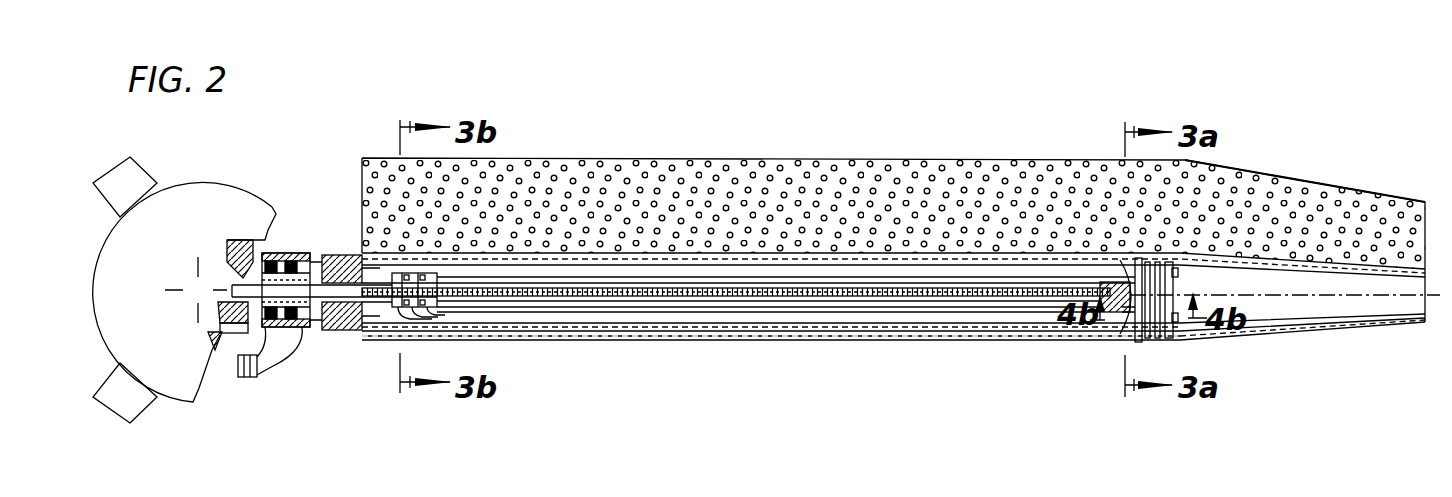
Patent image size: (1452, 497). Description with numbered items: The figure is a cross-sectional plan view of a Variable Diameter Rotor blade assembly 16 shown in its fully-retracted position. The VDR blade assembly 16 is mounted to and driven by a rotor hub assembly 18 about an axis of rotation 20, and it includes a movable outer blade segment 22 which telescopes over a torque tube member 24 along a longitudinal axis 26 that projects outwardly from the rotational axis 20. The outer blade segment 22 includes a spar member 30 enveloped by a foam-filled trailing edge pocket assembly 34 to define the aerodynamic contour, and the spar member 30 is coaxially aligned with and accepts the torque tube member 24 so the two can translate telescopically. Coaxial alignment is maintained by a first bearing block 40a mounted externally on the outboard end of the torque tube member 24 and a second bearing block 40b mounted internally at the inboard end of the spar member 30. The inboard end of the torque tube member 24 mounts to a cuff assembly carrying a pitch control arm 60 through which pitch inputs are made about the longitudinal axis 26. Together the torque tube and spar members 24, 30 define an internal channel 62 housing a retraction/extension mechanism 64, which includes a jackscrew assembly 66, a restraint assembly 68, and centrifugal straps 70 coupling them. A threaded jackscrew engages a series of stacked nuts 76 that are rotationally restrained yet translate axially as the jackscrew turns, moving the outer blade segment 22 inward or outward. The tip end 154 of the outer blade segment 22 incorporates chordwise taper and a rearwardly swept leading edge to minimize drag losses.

The VDR blade assembly 16 is at (1285, 168).
The rotor hub assembly 18 is at (221, 345).
The axis of rotation 20 is at (198, 283).
The outer blade segment 22 is at (892, 195).
The torque tube member 24 is at (808, 331).
The longitudinal axis 26 is at (1262, 296).
The spar member 30 is at (900, 340).
The foam-filled trailing edge pocket assembly 34 is at (747, 180).
The first bearing block 40a is at (1104, 328).
The second bearing block 40b is at (380, 274).
The pitch control arm 60 is at (272, 365).
The internal channel 62 is at (598, 325).
The retraction/extension mechanism 64 is at (540, 312).
The jackscrew assembly 66 is at (337, 256).
The restraint assembly 68 is at (1184, 282).
The centrifugal straps 70 is at (646, 308).
The stacked nuts 76 is at (430, 310).
The tip end 154 is at (1294, 340).